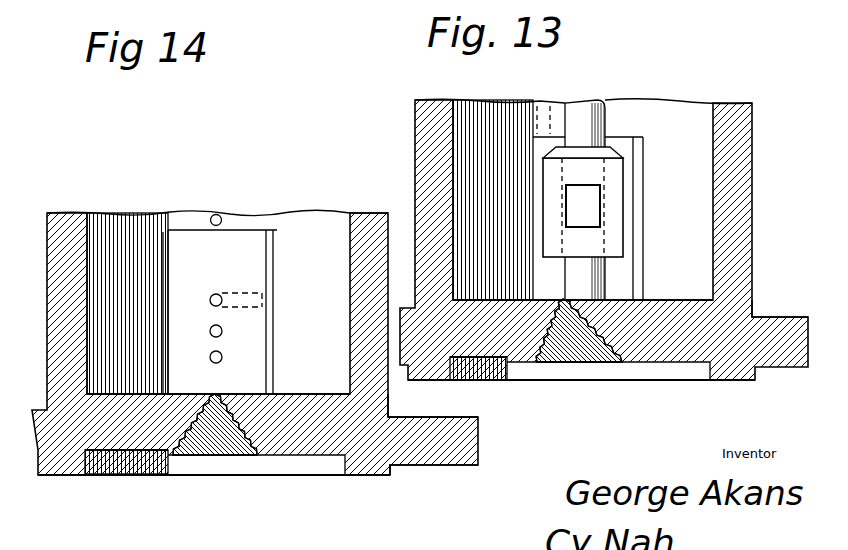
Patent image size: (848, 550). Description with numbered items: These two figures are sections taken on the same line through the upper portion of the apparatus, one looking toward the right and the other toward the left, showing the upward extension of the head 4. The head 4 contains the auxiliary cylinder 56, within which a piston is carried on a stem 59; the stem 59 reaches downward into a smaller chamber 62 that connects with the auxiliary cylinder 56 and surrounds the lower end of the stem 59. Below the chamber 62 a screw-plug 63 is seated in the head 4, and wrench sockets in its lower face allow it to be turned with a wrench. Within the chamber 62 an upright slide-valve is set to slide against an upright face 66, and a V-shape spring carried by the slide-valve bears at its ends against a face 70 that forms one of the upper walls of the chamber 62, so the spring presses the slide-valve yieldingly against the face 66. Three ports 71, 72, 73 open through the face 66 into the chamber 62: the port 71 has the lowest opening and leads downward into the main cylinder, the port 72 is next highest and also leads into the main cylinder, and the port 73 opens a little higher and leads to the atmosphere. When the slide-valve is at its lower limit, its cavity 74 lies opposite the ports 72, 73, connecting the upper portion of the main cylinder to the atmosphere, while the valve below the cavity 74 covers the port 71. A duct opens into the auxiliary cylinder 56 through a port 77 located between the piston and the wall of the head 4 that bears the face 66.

In FIG. 14, the head 4 is at (398, 468).
In FIG. 13, the head 4 is at (764, 355).
In FIG. 14, the auxiliary cylinder 56 is at (93, 214).
In FIG. 13, the auxiliary cylinder 56 is at (753, 110).
In FIG. 13, the stem 59 is at (600, 102).
In FIG. 13, the chamber 62 is at (502, 200).
In FIG. 14, the screw-plug 63 is at (217, 453).
In FIG. 13, the screw-plug 63 is at (560, 350).
In FIG. 14, the upright face 66 is at (218, 294).
In FIG. 13, the face 70 is at (542, 148).
In FIG. 14, the port 71 is at (222, 357).
In FIG. 14, the port 72 is at (222, 330).
In FIG. 14, the port 73 is at (223, 247).
In FIG. 13, the cavity 74 is at (582, 202).
In FIG. 14, the port 77 is at (210, 218).